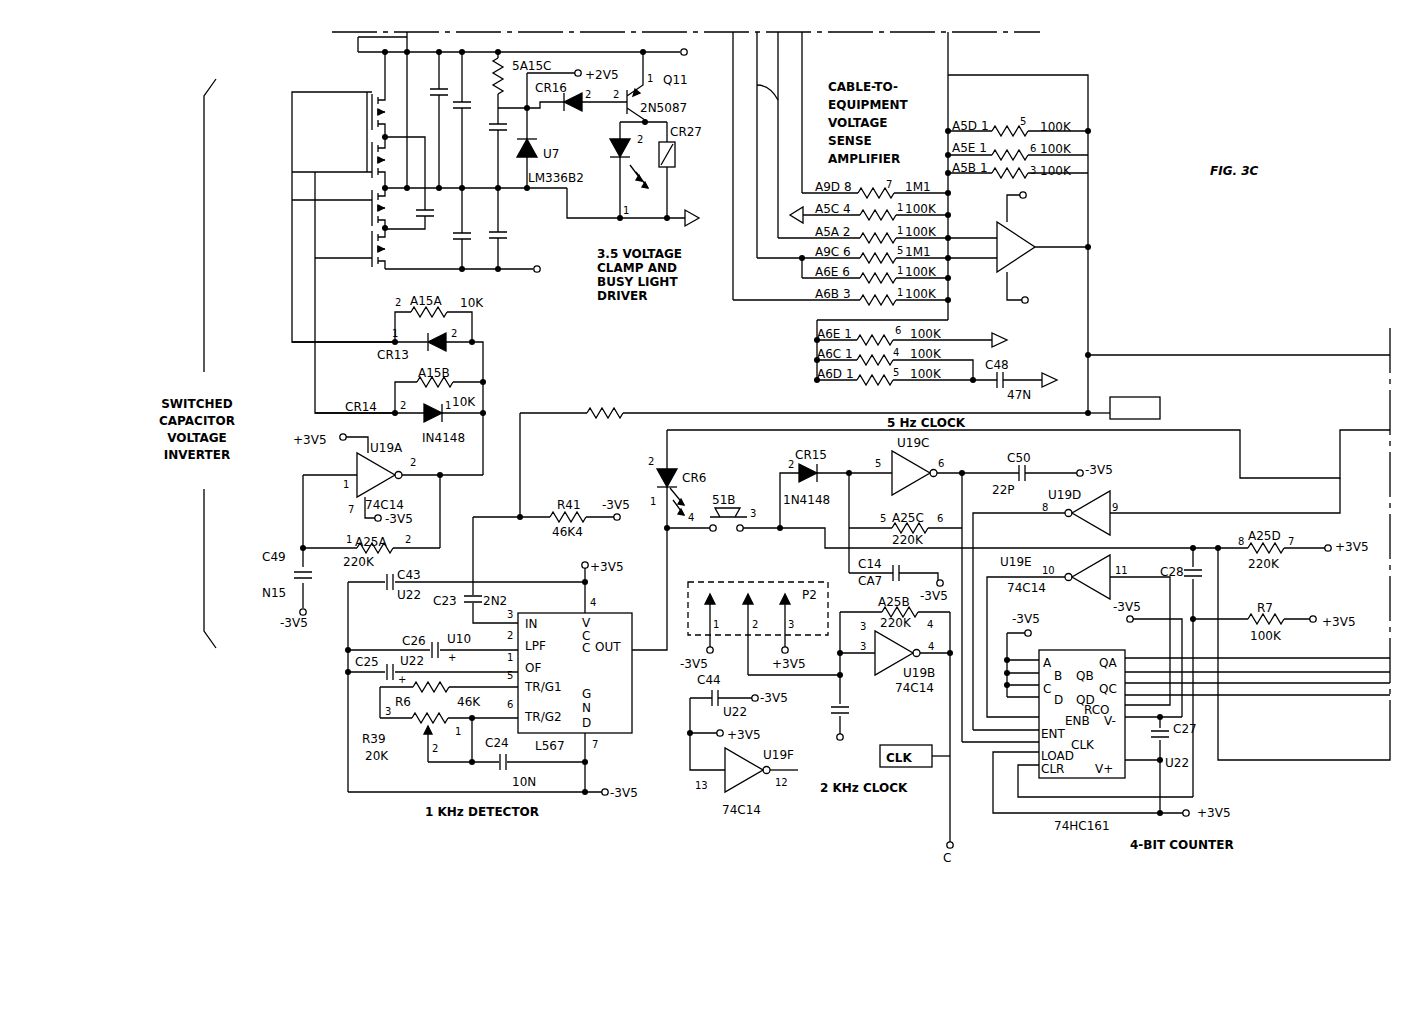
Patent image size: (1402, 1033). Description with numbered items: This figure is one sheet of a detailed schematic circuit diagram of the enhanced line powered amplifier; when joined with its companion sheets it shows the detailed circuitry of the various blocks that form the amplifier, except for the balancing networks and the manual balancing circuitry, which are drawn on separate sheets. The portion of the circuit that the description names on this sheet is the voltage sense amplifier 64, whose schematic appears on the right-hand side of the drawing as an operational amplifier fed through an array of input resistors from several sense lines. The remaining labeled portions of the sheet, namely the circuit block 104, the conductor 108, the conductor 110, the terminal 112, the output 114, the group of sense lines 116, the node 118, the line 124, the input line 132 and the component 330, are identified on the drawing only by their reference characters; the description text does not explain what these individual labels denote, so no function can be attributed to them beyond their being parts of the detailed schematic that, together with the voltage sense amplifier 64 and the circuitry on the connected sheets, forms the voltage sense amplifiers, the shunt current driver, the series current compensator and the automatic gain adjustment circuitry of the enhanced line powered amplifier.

The switched capacitor voltage inverter 104 is at (321, 76).
The positive supply bus 108 is at (553, 52).
The negative supply line 110 is at (483, 270).
The supply terminal 112 is at (733, 84).
The busy light driver output 114 is at (733, 208).
The sense input lines 116 is at (792, 262).
The VCE node 118 is at (1097, 397).
The output line 124 is at (1142, 352).
The R40 input line 132 is at (733, 412).
The voltage sense amplifier 64 is at (1167, 270).
The capacitor C15 330 is at (857, 725).